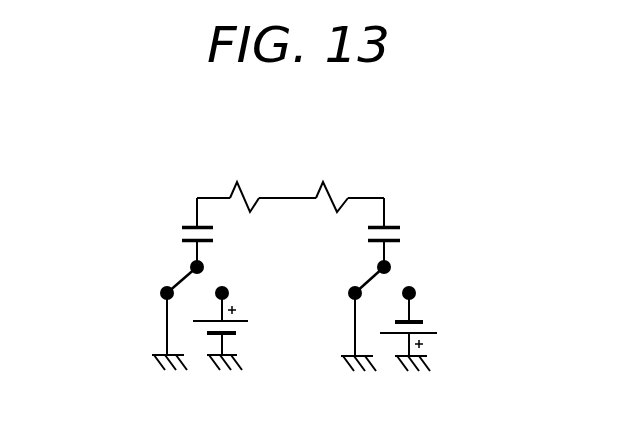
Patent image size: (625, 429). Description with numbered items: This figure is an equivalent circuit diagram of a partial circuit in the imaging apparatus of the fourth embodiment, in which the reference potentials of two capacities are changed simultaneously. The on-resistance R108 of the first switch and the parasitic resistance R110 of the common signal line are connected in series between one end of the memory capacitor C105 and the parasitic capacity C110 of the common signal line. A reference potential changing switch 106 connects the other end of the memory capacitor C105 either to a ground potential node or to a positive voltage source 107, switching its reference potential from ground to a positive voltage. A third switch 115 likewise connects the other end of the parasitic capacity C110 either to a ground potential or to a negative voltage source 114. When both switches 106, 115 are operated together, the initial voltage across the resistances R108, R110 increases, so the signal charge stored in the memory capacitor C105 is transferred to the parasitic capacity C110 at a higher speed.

The on-resistance R108 is at (235, 183).
The parasitic resistance R110 is at (322, 190).
The memory capacitor C105 is at (180, 233).
The parasitic capacity C110 is at (402, 233).
The reference potential changing switch 106 is at (188, 272).
The third switch 115 is at (372, 271).
The voltage source 107 is at (250, 327).
The negative voltage source 114 is at (437, 324).